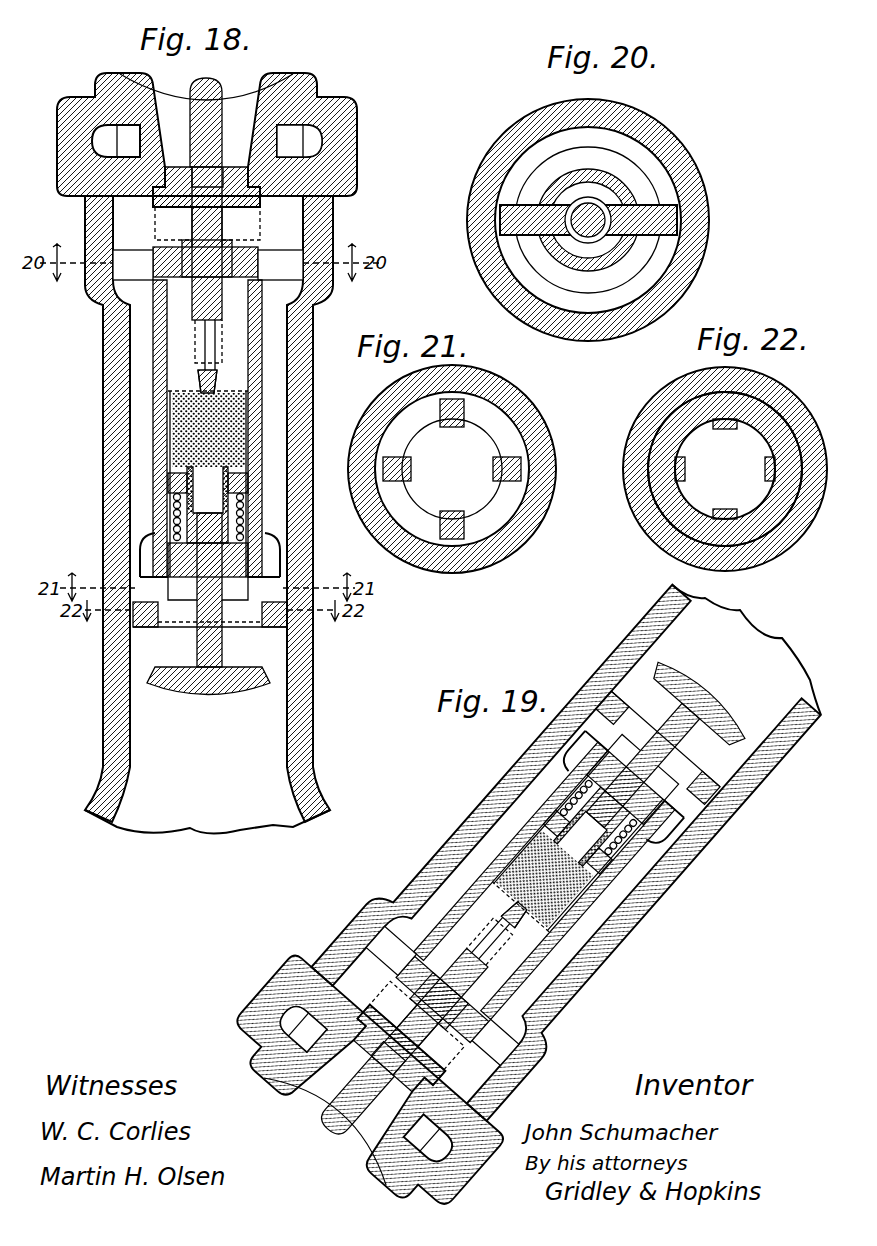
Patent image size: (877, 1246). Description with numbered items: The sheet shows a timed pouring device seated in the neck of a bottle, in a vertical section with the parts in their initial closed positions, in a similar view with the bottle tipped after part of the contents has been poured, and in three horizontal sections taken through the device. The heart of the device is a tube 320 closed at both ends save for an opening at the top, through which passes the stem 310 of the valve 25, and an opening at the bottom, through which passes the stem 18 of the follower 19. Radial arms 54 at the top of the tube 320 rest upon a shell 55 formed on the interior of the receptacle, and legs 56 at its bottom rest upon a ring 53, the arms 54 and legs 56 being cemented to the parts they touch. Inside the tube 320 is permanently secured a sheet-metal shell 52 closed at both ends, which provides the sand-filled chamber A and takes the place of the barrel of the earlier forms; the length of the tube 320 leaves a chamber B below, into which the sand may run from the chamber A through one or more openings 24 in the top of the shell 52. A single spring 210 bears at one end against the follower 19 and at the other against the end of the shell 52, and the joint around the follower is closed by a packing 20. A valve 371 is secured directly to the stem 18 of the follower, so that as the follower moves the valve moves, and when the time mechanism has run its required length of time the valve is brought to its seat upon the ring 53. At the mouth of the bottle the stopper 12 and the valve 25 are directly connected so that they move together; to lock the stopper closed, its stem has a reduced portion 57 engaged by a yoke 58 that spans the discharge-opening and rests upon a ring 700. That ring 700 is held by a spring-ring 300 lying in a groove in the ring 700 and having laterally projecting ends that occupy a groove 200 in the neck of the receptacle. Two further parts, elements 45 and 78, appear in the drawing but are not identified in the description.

In FIG. 18, the stopper 12 is at (206, 243).
In FIG. 19, the stopper 12 is at (430, 1012).
In FIG. 19, the stem of the follower 18 is at (717, 710).
In FIG. 18, the follower 19 is at (237, 475).
In FIG. 19, the follower 19 is at (603, 867).
In FIG. 18, the packing 20 is at (247, 485).
In FIG. 19, the packing 20 is at (623, 850).
In FIG. 18, the opening 24 is at (217, 381).
In FIG. 19, the opening 24 is at (510, 945).
In FIG. 18, the valve 25 is at (213, 372).
In FIG. 19, the valve 25 is at (543, 850).
In FIG. 18, the nut 45 is at (187, 242).
In FIG. 20, the nut 45 is at (573, 233).
In FIG. 19, the nut 45 is at (470, 1032).
In FIG. 18, the sheet-metal shell 52 is at (172, 513).
In FIG. 19, the sheet-metal shell 52 is at (577, 793).
In FIG. 18, the ring 53 is at (270, 630).
In FIG. 21, the ring 53 is at (503, 510).
In FIG. 22, the ring 53 is at (772, 497).
In FIG. 19, the ring 53 is at (740, 747).
In FIG. 18, the radial arms 54 is at (287, 253).
In FIG. 20, the radial arms 54 is at (680, 217).
In FIG. 19, the radial arms 54 is at (441, 996).
In FIG. 18, the shell 55 is at (313, 302).
In FIG. 20, the shell 55 is at (600, 300).
In FIG. 18, the legs 56 is at (273, 567).
In FIG. 21, the legs 56 is at (407, 480).
In FIG. 22, the legs 56 is at (718, 510).
In FIG. 19, the legs 56 is at (710, 781).
In FIG. 18, the reduced portion 57 is at (214, 88).
In FIG. 19, the reduced portion 57 is at (375, 1100).
In FIG. 18, the yoke 58 is at (228, 96).
In FIG. 18, the plate 78 is at (213, 640).
In FIG. 18, the groove 200 is at (320, 147).
In FIG. 19, the groove 200 is at (290, 968).
In FIG. 18, the spring 210 is at (253, 522).
In FIG. 19, the spring 210 is at (677, 830).
In FIG. 18, the spring-ring 300 is at (310, 135).
In FIG. 19, the spring-ring 300 is at (275, 990).
In FIG. 18, the stem of the valve 310 is at (223, 226).
In FIG. 20, the stem of the valve 310 is at (588, 235).
In FIG. 19, the stem of the valve 310 is at (410, 952).
In FIG. 18, the tube 320 is at (157, 333).
In FIG. 20, the tube 320 is at (607, 257).
In FIG. 19, the tube 320 is at (663, 850).
In FIG. 18, the valve 371 is at (177, 681).
In FIG. 19, the valve 371 is at (683, 683).
In FIG. 18, the ring 700 is at (283, 90).
In FIG. 18, the chamber A is at (208, 452).
In FIG. 19, the chamber A is at (558, 864).
In FIG. 18, the chamber B is at (199, 341).
In FIG. 19, the chamber B is at (490, 934).